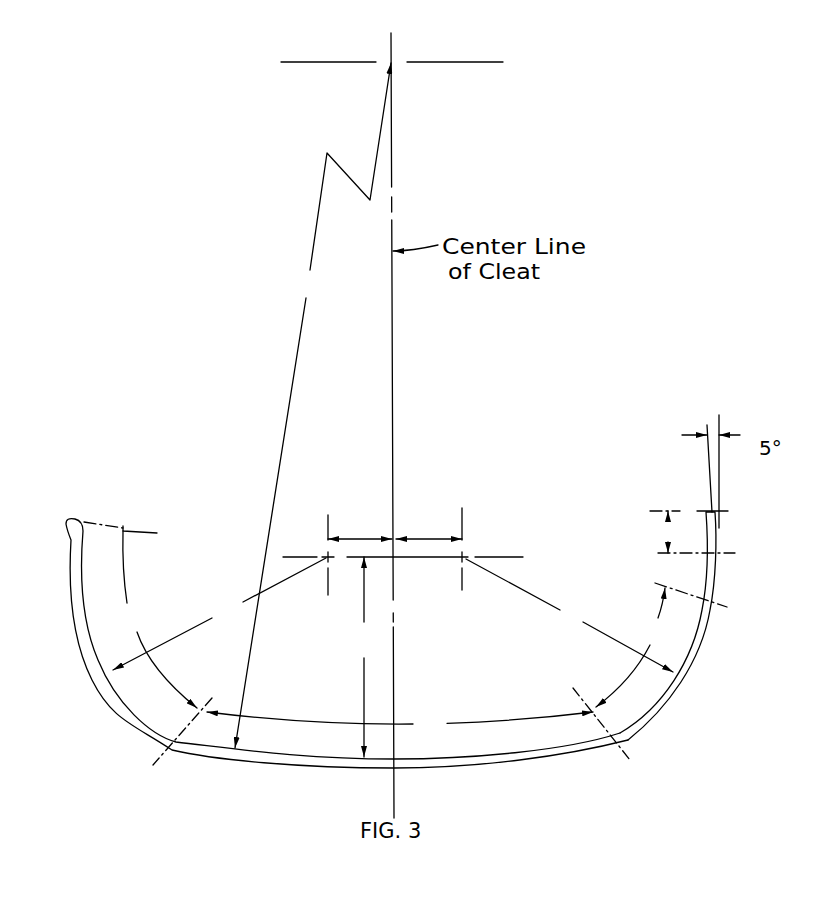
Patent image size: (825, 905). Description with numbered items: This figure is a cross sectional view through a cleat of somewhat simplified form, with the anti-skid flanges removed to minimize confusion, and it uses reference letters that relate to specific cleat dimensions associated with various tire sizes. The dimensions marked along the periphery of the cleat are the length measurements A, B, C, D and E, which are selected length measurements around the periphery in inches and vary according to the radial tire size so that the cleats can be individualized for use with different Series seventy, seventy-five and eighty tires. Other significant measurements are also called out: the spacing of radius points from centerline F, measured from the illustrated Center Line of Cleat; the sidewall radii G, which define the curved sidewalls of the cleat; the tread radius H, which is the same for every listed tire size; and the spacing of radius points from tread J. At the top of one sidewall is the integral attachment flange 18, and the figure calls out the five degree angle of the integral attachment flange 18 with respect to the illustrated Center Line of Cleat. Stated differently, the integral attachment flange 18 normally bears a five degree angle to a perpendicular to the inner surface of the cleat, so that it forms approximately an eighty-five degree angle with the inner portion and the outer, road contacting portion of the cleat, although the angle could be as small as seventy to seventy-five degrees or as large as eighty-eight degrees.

The integral attachment flange 18 is at (705, 525).
The length measurement A is at (689, 532).
The length measurement B is at (695, 580).
The length measurement C is at (619, 674).
The length measurement D is at (373, 731).
The length measurement E is at (140, 615).
The spacing of radius points from centerline F is at (403, 551).
The sidewall radii G is at (393, 615).
The tread radius H is at (313, 405).
The spacing of radius points from tread J is at (363, 657).